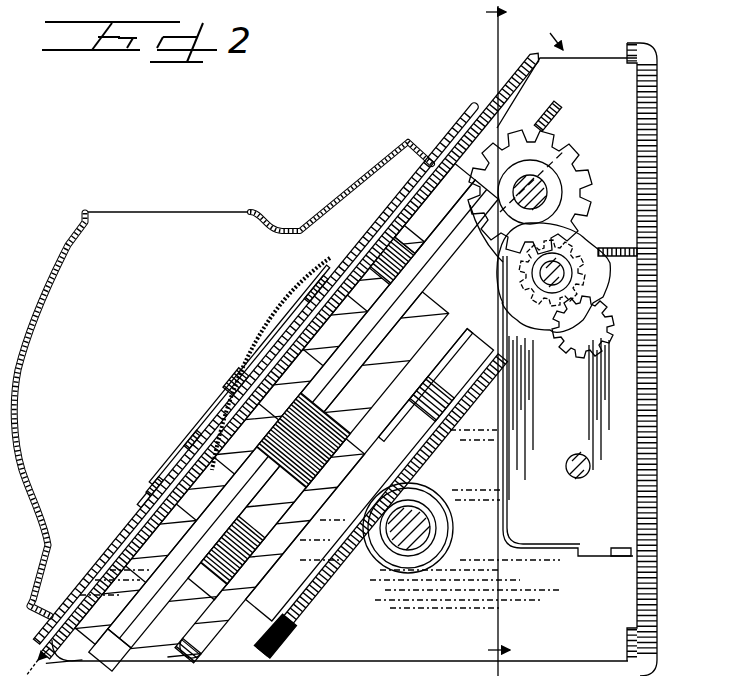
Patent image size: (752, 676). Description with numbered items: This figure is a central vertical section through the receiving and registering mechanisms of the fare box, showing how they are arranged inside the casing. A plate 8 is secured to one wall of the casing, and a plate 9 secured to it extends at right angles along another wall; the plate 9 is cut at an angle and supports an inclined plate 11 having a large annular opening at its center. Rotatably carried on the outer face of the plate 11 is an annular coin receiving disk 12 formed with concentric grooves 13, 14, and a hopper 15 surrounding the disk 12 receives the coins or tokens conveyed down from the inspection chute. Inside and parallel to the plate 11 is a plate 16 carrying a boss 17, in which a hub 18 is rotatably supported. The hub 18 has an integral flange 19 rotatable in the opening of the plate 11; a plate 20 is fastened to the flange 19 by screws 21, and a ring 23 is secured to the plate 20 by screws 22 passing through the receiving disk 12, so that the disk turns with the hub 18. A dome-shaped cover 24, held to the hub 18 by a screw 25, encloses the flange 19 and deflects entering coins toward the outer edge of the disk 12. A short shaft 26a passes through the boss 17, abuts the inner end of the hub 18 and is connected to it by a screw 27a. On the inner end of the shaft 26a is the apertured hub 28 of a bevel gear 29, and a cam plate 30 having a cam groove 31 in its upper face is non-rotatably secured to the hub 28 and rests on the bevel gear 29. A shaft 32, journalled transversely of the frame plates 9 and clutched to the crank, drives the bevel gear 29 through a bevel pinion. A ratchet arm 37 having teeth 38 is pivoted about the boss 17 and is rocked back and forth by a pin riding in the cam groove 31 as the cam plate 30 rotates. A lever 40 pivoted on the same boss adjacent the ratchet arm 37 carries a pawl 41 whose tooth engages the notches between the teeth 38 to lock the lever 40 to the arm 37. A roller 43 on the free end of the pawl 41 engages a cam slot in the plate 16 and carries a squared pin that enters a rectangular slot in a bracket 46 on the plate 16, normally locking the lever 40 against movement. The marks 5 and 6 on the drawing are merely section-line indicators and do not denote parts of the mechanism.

The section line 5- 5 is at (289, 346).
The section line 6- 6 is at (488, 652).
The plate 8 is at (646, 92).
The plate 9 is at (594, 72).
The plate 11 is at (491, 100).
The coin receiving disk 12 is at (388, 212).
The concentric groove 13 is at (418, 192).
The concentric groove 14 is at (364, 246).
The hopper 15 is at (28, 347).
The plate 16 is at (126, 622).
The boss 17 is at (430, 394).
The hub 18 is at (224, 474).
The flange 19 is at (258, 360).
The plate 20 is at (178, 510).
The screws 21 is at (188, 445).
The screws 22 is at (346, 284).
The ring 23 is at (160, 500).
The dome-shaped cover 24 is at (248, 342).
The screw 25 is at (226, 373).
The short shaft 26a is at (412, 470).
The screw 27a is at (224, 540).
The apertured hub 28 is at (320, 580).
The bevel gear 29 is at (283, 626).
The cam plate 30 is at (238, 612).
The cam groove 31 is at (186, 614).
The shaft 32 is at (424, 537).
The ratchet arm 37 is at (390, 343).
The teeth 38 is at (543, 277).
The lever 40 is at (386, 340).
The pawl 41 is at (514, 160).
The roller 43 is at (374, 262).
The bracket 46 is at (523, 192).